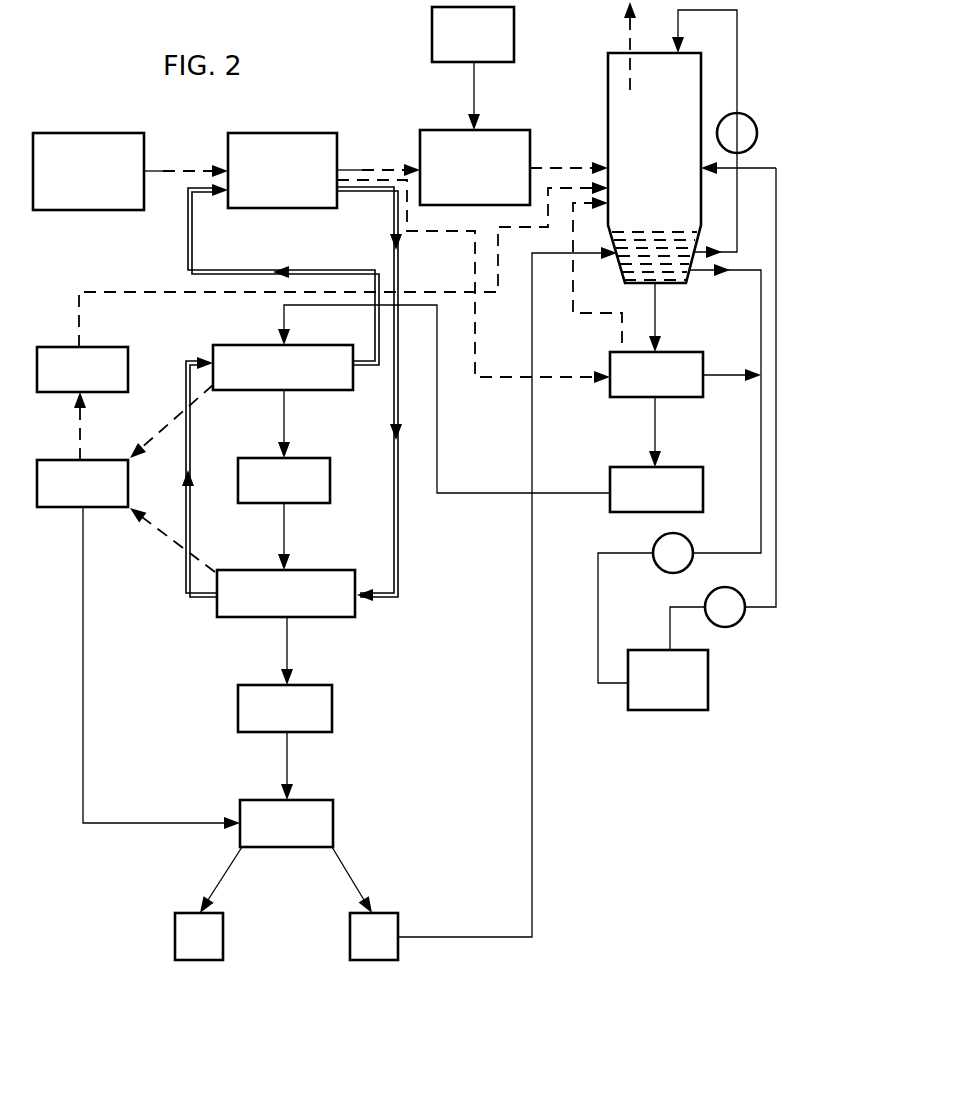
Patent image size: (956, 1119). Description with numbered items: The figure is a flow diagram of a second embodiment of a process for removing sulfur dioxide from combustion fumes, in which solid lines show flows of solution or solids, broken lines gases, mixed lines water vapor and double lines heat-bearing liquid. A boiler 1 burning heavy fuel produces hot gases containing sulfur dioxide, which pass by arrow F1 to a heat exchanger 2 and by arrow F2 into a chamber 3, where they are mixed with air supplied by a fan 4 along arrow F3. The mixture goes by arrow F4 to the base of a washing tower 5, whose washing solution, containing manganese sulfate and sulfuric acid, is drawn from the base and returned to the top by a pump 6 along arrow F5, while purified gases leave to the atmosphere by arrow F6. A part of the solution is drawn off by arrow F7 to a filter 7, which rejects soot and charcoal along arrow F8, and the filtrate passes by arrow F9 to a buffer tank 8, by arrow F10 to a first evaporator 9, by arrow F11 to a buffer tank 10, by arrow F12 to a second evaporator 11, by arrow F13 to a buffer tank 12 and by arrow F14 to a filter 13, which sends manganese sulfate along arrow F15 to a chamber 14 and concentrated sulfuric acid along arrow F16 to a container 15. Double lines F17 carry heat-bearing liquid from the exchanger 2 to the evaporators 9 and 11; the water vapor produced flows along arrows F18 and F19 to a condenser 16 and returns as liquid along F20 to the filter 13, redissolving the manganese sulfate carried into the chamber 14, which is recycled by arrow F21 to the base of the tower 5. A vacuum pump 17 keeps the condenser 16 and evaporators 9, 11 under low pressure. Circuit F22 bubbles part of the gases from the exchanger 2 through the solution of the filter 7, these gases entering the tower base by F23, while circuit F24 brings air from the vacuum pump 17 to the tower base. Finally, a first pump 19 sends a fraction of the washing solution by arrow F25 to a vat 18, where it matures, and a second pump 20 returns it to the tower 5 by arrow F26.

The boiler 1 is at (102, 144).
The heat exchanger 2 is at (295, 143).
The chamber 3 is at (451, 140).
The fan 4 is at (445, 35).
The washing tower 5 is at (626, 122).
The pump 6 is at (744, 128).
The filter 7 is at (674, 363).
The buffer tank 8 is at (677, 479).
The first evaporator 9 is at (260, 378).
The buffer tank 10 is at (270, 494).
The second evaporator 11 is at (260, 604).
The buffer tank 12 is at (264, 718).
The filter 13 is at (317, 828).
The chamber 14 is at (386, 945).
The container 15 is at (204, 945).
The condenser 16 is at (74, 494).
The vacuum pump 17 is at (72, 379).
The vat 18 is at (664, 695).
The first pump 19 is at (661, 562).
The second pump 20 is at (742, 616).
The flow of combustion gases to heat exchanger F1 is at (164, 171).
The flow of combustion gases to chamber F2 is at (361, 171).
The flow of air F3 is at (477, 92).
The flow of gas mixture to tower F4 is at (547, 171).
The washing solution circulation F5 is at (766, 222).
The flow of purified gases F6 is at (628, 38).
The flow of drawn-off solution to filter F7 is at (669, 320).
The flow of soot and charcoal F8 is at (720, 375).
The flow of solution to buffer tank F9 is at (669, 438).
The flow of solution to first evaporator F10 is at (461, 493).
The flow of solution to buffer tank F11 is at (284, 420).
The flow of solution to second evaporator F12 is at (284, 532).
The flow of concentrated solution to buffer tank F13 is at (287, 645).
The flow of concentrated solution to filter F14 is at (287, 757).
The flow of manganese sulfate F15 is at (360, 881).
The flow of concentrated sulfuric acid F16 is at (224, 883).
The heat-carrying liquid circulation F17 is at (186, 250).
The water vapor flow F18 is at (182, 418).
The water vapor flow F19 is at (177, 531).
The condensed water flow F20 is at (83, 726).
The recycled solution flow F21 is at (534, 678).
The combustion gas bubbling circuit F22 is at (478, 378).
The gas flow to tower base F23 is at (600, 296).
The vacuum pump air circuit F24 is at (102, 291).
The flow of solution to vat F25 is at (760, 436).
The flow of matured solution to tower F26 is at (772, 491).